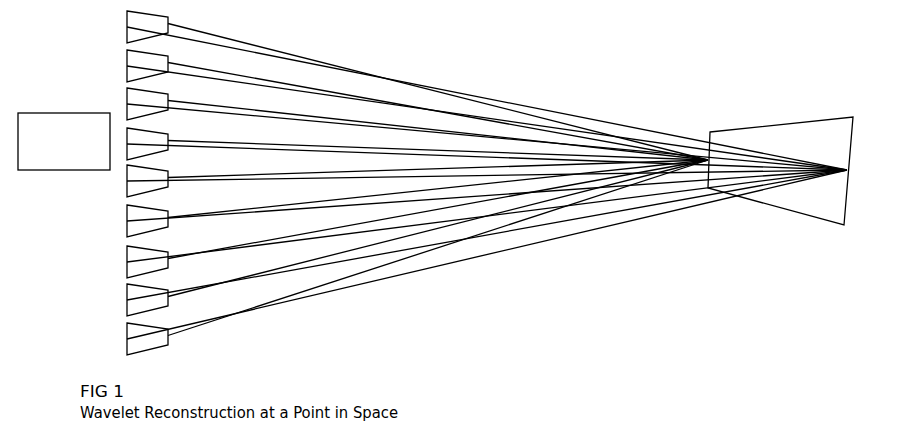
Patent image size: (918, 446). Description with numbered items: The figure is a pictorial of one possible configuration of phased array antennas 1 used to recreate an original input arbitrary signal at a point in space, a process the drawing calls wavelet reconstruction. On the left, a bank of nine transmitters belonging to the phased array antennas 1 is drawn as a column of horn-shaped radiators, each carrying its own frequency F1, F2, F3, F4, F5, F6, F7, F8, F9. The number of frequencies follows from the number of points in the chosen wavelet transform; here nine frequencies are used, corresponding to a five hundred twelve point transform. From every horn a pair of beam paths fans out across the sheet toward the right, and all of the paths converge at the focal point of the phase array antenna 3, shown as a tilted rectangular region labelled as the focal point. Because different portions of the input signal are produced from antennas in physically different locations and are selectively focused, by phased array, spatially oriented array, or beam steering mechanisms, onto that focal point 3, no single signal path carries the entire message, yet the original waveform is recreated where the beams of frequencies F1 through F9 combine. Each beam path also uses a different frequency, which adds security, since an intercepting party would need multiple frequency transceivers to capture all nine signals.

The phased array antennas 1 is at (88, 113).
The focal point of phase array antenna 3 is at (812, 117).
The first frequency F1 is at (487, 90).
The second frequency F2 is at (487, 110).
The third frequency F3 is at (487, 129).
The fourth frequency F4 is at (487, 149).
The fifth frequency F5 is at (487, 178).
The sixth frequency F6 is at (487, 198).
The seventh frequency F7 is at (487, 219).
The eighth frequency F8 is at (487, 238).
The ninth frequency F9 is at (487, 257).